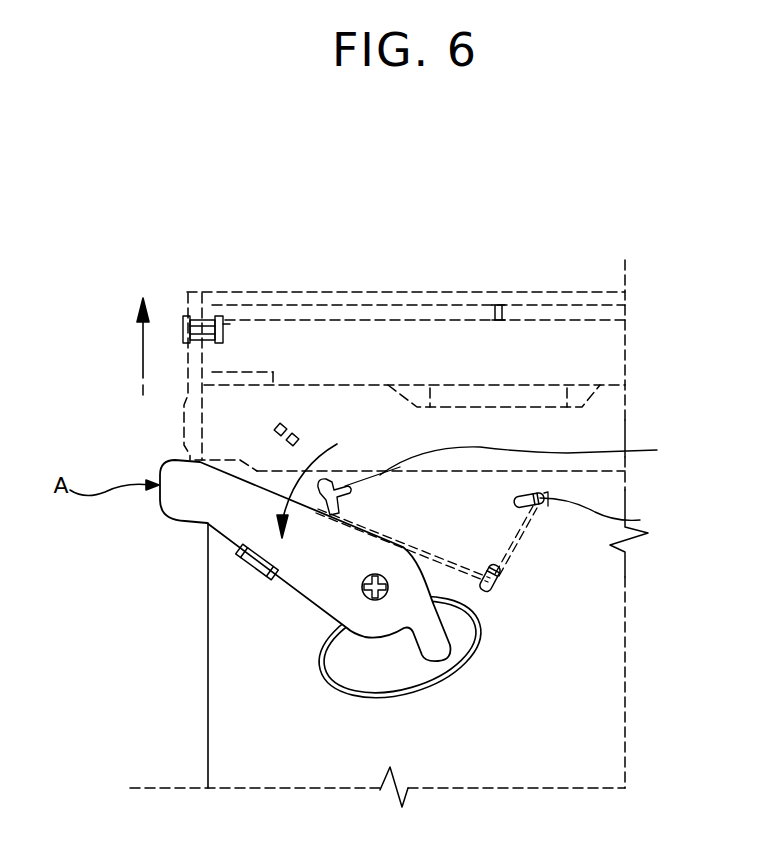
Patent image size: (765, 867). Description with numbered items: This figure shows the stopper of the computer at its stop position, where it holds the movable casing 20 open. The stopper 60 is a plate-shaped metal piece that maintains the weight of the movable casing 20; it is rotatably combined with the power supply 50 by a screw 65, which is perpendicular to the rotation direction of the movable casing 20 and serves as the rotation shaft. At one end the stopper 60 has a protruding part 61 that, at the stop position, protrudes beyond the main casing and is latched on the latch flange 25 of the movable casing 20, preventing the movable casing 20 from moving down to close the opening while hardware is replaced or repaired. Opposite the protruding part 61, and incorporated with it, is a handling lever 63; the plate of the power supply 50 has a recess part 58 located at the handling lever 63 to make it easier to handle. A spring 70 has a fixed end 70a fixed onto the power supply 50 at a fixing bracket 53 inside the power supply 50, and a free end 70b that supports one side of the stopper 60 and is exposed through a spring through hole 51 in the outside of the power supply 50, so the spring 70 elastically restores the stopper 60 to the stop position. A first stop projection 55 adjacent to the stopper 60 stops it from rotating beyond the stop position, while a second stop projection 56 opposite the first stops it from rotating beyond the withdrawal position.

The movable casing 20 is at (552, 293).
The latch flange 25 is at (186, 436).
The power supply 50 is at (227, 753).
The spring through hole 51 is at (533, 455).
The fixing bracket 53 is at (640, 520).
The first stop projection 55 is at (243, 562).
The second stop projection 56 is at (277, 417).
The recess part 58 is at (378, 678).
The stopper 60 is at (237, 595).
The protruding part 61 is at (160, 504).
The handling lever 63 is at (430, 645).
The screw 65 is at (362, 582).
The spring 70 is at (514, 548).
The fixed end 70a is at (552, 489).
The free end 70b is at (360, 520).